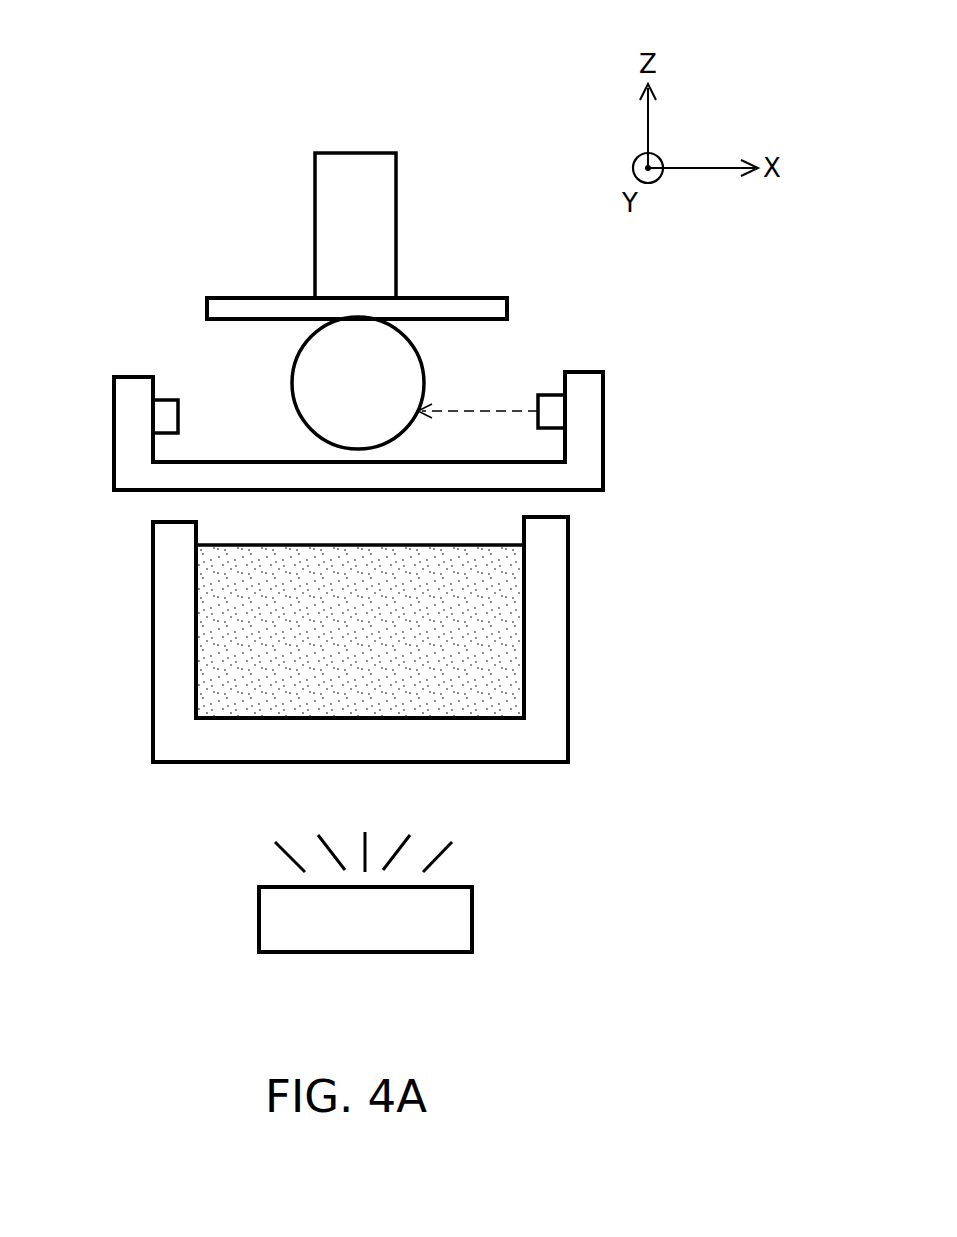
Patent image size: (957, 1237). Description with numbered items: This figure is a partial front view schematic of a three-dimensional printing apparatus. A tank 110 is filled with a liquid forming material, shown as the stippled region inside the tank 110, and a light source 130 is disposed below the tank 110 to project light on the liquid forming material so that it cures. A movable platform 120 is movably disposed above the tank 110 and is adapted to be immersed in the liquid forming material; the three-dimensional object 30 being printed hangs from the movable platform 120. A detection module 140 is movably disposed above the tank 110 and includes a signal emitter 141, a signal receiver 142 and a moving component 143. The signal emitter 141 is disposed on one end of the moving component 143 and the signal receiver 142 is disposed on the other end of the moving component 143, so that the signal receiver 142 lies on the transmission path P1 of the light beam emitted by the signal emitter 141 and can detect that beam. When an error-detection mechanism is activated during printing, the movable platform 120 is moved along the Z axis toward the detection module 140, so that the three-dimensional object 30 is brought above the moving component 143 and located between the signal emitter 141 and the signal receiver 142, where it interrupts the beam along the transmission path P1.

The detection module 140 is at (95, 78).
The signal emitter 141 is at (551, 400).
The signal receiver 142 is at (163, 408).
The moving component 143 is at (133, 390).
The movable platform 120 is at (383, 210).
The three-dimensional object 30 is at (292, 386).
The transmission path P1 is at (492, 411).
The tank 110 is at (570, 620).
The light source 130 is at (472, 920).